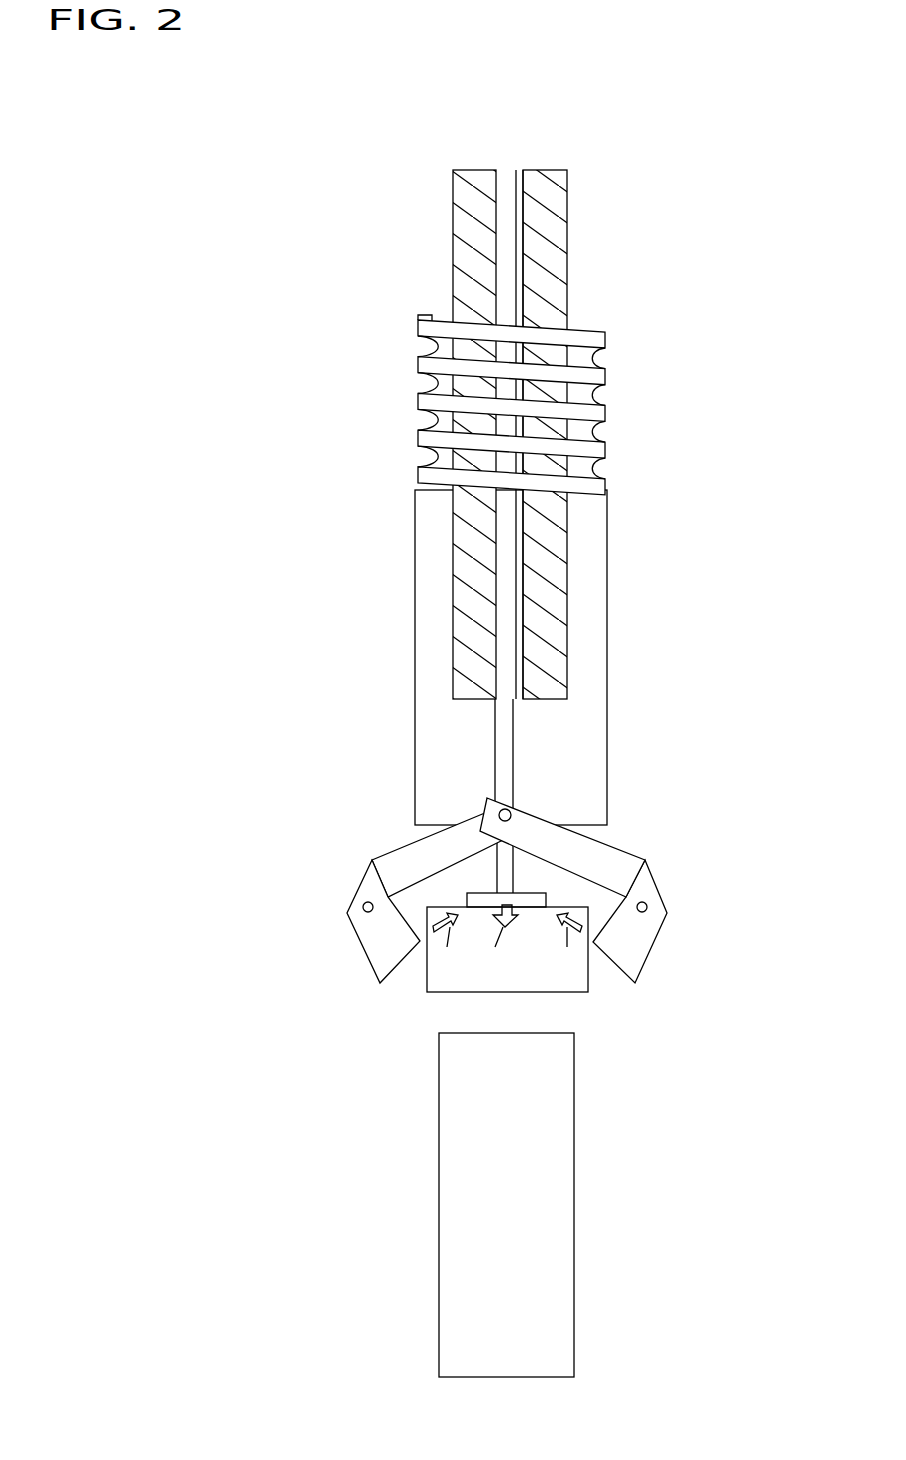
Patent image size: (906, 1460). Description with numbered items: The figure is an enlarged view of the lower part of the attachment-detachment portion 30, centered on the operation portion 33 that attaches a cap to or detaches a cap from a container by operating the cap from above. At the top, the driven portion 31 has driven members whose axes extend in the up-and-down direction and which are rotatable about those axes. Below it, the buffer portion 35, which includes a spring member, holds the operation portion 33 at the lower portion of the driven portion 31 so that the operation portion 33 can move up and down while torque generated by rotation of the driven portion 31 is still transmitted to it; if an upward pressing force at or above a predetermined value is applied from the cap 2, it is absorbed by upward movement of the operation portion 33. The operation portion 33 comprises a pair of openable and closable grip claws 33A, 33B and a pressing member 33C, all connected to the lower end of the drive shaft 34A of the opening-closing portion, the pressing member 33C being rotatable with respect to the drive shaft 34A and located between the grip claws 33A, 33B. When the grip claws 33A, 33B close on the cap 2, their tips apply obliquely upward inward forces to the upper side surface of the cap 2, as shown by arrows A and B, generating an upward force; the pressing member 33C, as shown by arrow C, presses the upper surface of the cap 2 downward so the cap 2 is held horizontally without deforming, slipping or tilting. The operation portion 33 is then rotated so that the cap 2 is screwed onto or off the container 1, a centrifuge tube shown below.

The attachment-detachment portion 30 is at (744, 149).
The driven portion 31 is at (465, 278).
The buffer portion 35 is at (418, 435).
The drive shaft 34A is at (503, 663).
The operation portion 33 is at (362, 792).
The grip claw 33A is at (387, 958).
The grip claw 33B is at (630, 960).
The pressing member 33C is at (477, 893).
The cap 2 is at (543, 980).
The container 1 is at (558, 1203).